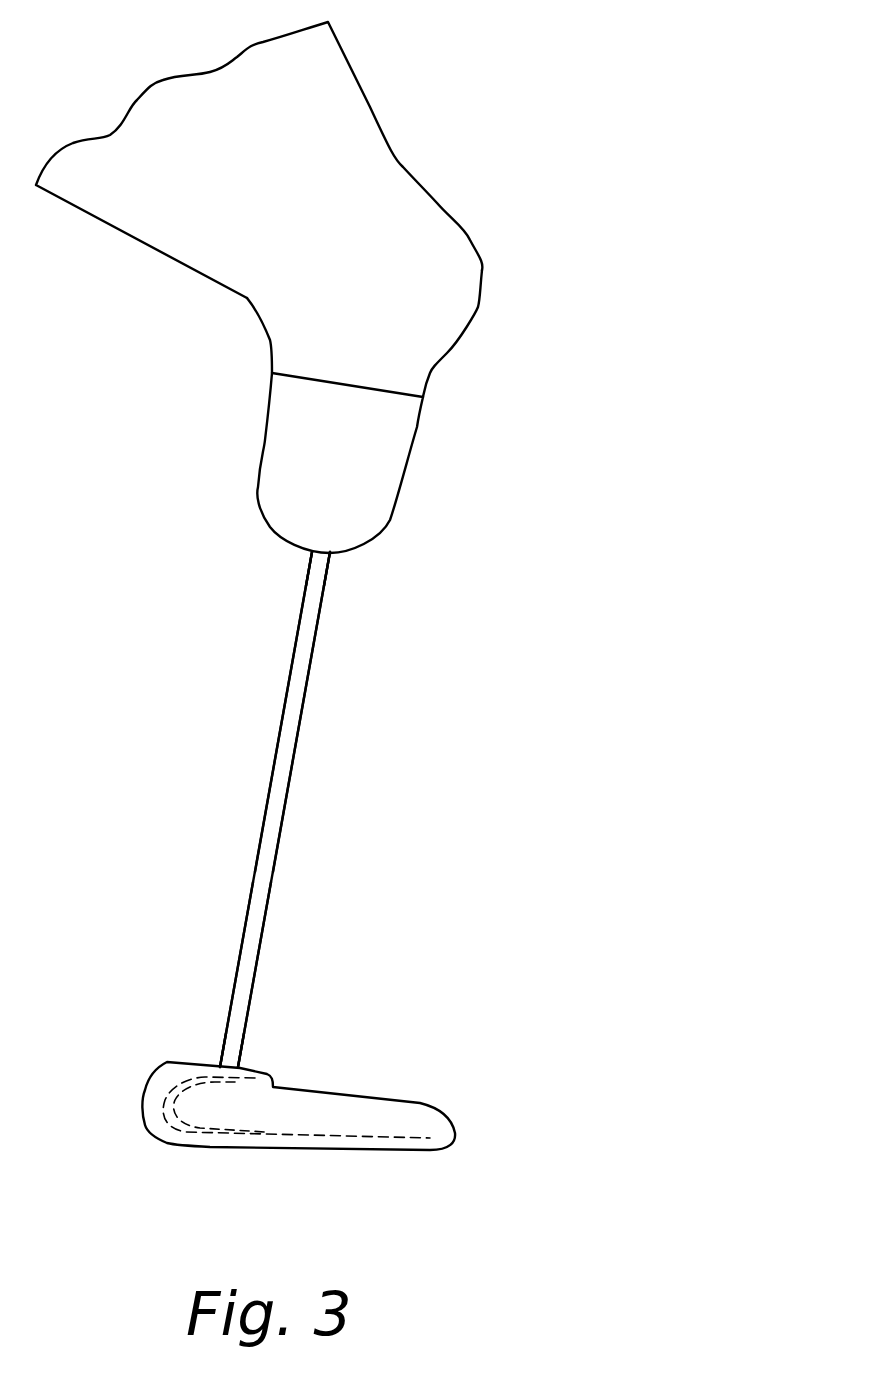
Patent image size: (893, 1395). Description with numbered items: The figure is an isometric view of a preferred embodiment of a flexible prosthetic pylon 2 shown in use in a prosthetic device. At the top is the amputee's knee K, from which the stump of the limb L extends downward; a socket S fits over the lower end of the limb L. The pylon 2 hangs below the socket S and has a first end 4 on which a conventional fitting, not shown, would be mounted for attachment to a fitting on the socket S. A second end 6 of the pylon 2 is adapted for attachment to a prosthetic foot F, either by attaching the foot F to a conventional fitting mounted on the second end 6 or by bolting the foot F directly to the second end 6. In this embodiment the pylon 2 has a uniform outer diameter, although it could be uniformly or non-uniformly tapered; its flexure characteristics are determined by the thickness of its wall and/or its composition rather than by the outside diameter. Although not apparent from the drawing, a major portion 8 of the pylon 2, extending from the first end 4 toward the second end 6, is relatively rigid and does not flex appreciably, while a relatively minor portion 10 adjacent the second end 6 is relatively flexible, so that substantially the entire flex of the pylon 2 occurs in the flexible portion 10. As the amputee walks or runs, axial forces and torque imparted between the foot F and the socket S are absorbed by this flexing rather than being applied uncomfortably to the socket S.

The knee K is at (262, 167).
The limb L is at (376, 338).
The socket S is at (347, 492).
The flexible prosthetic pylon 2 is at (270, 903).
The first end 4 is at (330, 563).
The second end 6 is at (240, 1067).
The major portion 8 is at (293, 553).
The minor portion 10 is at (237, 882).
The prosthetic foot F is at (348, 1137).